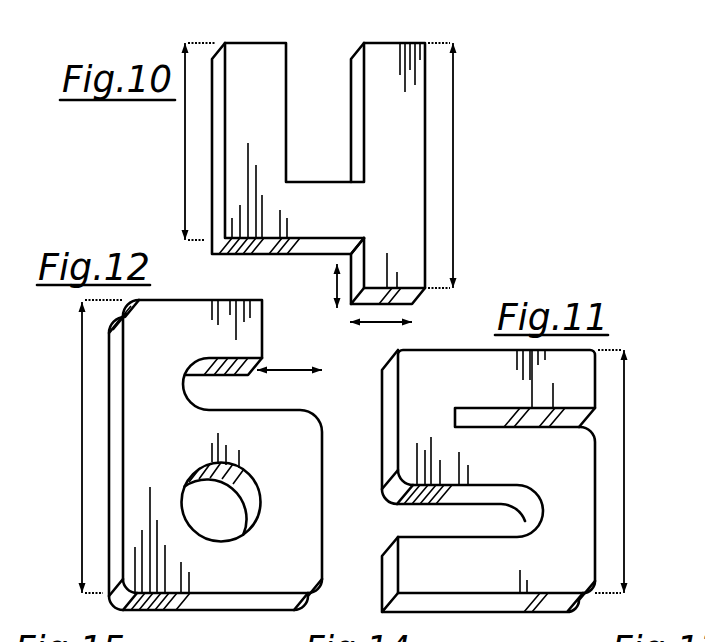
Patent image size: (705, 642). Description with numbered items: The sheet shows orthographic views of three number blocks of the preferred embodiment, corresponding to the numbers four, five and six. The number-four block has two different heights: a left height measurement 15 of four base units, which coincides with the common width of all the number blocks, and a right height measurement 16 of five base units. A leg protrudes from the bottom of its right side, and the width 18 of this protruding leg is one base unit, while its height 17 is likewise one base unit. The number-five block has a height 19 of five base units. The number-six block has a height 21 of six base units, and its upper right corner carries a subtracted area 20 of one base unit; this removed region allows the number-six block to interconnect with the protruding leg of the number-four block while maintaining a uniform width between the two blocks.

In FIG. 10, the left height measurement 15 is at (185, 139).
In FIG. 10, the right height measurement 16 is at (453, 156).
In FIG. 10, the height 17 is at (334, 282).
In FIG. 10, the width of the protruding leg 18 is at (383, 327).
In FIG. 11, the height 19 is at (627, 465).
In FIG. 12, the subtracted area 20 is at (297, 373).
In FIG. 12, the height 21 is at (82, 445).